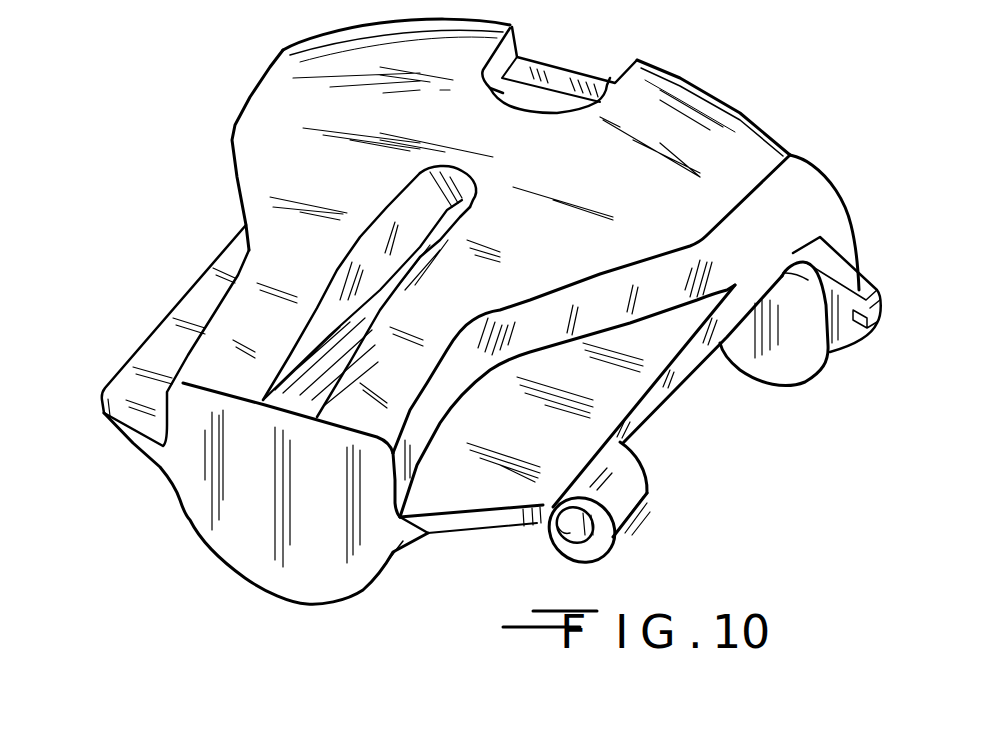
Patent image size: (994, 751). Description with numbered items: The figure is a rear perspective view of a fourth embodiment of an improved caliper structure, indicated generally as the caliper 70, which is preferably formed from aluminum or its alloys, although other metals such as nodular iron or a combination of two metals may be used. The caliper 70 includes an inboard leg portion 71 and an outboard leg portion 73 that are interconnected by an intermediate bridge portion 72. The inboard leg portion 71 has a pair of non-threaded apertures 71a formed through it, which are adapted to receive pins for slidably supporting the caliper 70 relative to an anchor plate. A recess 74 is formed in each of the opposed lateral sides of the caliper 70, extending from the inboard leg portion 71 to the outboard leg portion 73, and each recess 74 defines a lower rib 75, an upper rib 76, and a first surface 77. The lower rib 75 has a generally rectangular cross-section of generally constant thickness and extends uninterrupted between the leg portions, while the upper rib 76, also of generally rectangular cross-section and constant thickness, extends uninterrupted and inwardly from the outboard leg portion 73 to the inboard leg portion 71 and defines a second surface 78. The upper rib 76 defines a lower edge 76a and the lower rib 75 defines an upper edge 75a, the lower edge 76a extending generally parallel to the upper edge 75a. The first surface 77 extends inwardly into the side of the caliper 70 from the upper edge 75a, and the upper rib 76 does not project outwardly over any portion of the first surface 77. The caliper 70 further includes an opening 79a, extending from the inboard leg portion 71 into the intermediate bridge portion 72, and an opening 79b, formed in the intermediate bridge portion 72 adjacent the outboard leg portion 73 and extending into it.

The caliper 70 is at (213, 183).
The inboard leg portion 71 is at (633, 530).
The non-threaded apertures 71a is at (560, 523).
The intermediate bridge portion 72 is at (265, 115).
The outboard leg portion 73 is at (790, 368).
The recess 74 is at (603, 390).
The lower rib 75 is at (650, 412).
The upper edge 75a is at (680, 352).
The upper rib 76 is at (648, 290).
The lower edge 76a is at (420, 490).
The first surface 77 is at (200, 298).
The second surface 78 is at (460, 393).
The opening 79a is at (448, 224).
The opening 79b is at (603, 80).